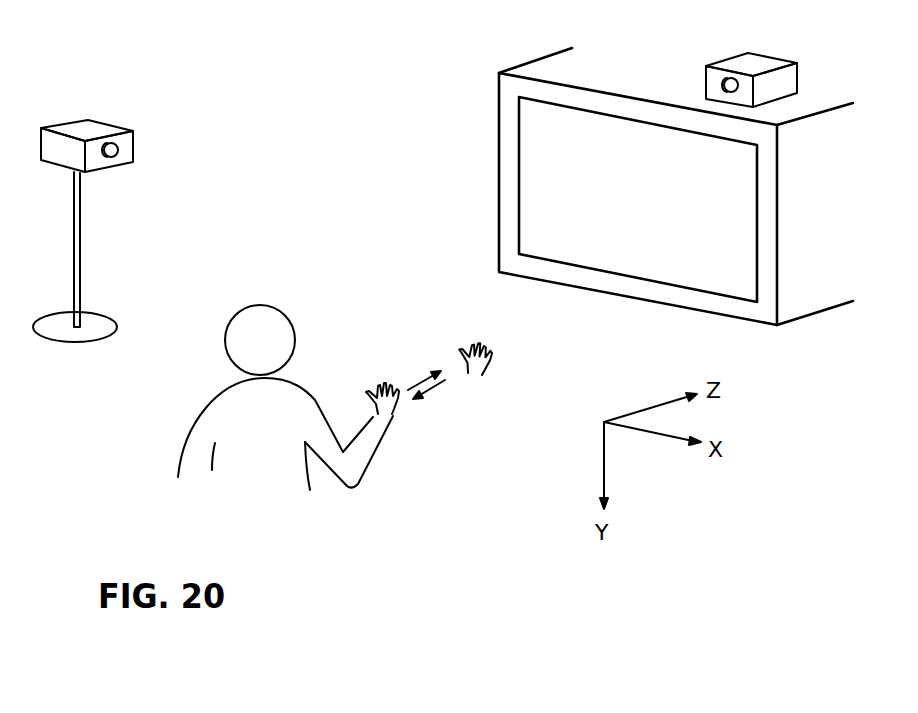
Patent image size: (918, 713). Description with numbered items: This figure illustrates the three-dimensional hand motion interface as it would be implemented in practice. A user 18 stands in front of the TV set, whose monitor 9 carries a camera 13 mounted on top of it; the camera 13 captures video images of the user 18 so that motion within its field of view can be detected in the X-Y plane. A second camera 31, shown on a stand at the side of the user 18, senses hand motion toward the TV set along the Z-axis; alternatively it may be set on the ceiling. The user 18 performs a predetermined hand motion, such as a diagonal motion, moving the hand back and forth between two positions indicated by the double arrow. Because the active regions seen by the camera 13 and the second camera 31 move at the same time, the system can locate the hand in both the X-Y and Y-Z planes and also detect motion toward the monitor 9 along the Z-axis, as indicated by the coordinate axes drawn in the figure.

The second camera 31 is at (67, 123).
The camera 13 is at (772, 55).
The monitor 9 is at (812, 318).
The user 18 is at (182, 441).